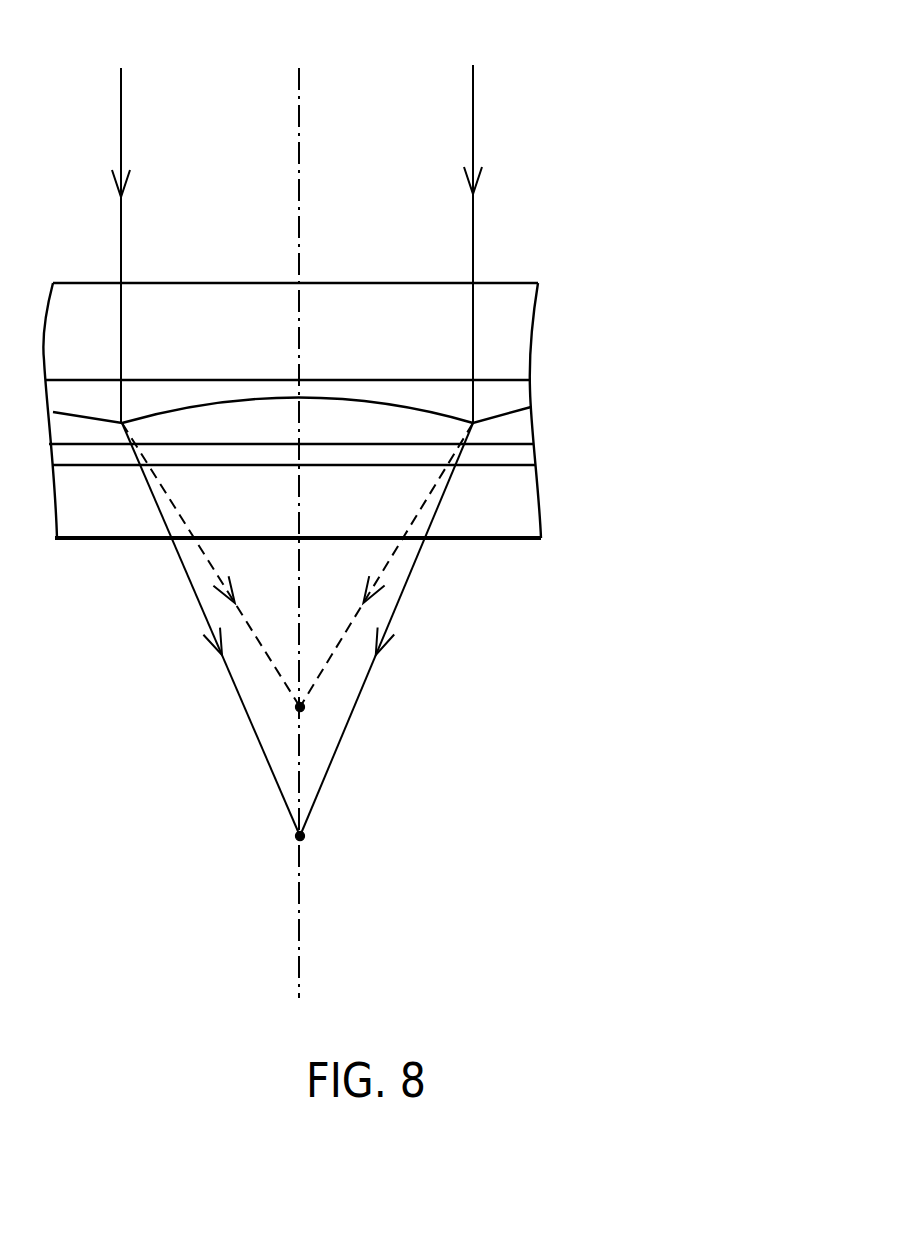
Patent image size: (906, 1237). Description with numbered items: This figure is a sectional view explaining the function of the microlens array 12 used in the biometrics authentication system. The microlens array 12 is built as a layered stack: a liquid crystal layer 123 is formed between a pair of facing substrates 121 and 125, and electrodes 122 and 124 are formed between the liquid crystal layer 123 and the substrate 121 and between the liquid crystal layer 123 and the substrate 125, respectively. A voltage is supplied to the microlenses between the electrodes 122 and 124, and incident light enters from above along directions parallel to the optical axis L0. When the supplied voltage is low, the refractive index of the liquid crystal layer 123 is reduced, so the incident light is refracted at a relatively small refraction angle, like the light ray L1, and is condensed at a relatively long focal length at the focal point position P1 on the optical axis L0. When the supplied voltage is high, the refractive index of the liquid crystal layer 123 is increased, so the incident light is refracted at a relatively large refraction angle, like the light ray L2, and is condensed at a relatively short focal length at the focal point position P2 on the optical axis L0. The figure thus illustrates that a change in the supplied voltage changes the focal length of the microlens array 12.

The microlens array 12 is at (668, 163).
The substrate 121 is at (518, 327).
The electrode 122 is at (525, 393).
The liquid crystal layer 123 is at (520, 425).
The electrode 124 is at (527, 452).
The substrate 125 is at (528, 493).
The optical axis L0 is at (299, 92).
The light ray L1 is at (256, 730).
The light ray L2 is at (190, 567).
The focal point position P1 is at (304, 836).
The focal point position P2 is at (304, 707).